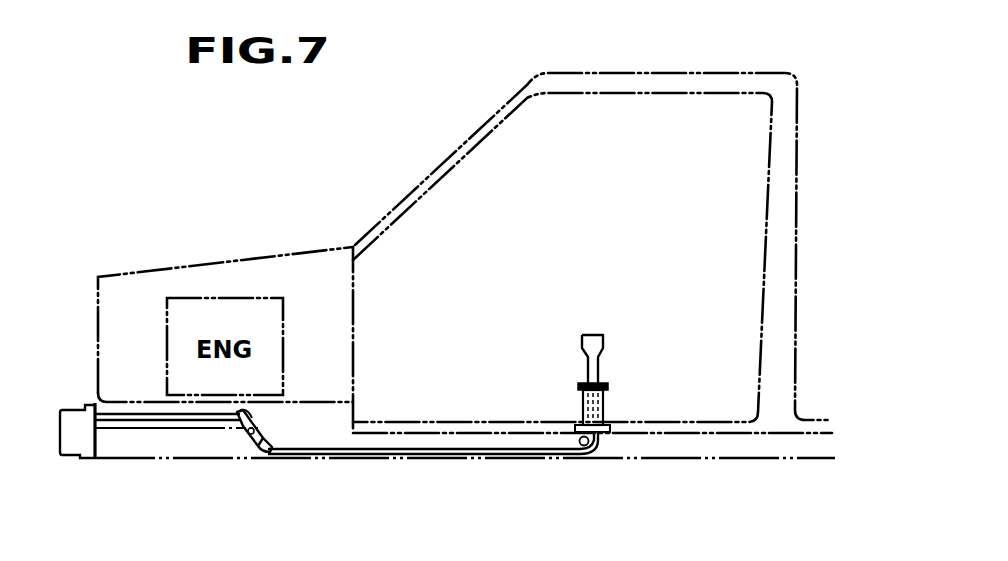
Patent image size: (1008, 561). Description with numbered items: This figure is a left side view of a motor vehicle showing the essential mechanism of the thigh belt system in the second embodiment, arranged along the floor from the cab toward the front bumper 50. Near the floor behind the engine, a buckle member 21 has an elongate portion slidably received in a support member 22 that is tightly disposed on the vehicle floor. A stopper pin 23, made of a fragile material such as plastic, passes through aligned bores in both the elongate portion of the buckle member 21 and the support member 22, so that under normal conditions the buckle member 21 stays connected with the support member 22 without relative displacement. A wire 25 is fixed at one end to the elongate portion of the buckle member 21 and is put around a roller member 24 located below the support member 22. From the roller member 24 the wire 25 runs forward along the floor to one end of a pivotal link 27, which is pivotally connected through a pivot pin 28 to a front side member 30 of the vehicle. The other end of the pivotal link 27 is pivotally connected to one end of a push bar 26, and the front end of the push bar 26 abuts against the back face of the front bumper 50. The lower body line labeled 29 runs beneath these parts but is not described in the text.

The buckle member 21 is at (604, 338).
The support member 22 is at (582, 407).
The stopper pin 23 is at (580, 385).
The roller member 24 is at (587, 457).
The wire 25 is at (488, 456).
The push bar 26 is at (148, 421).
The pivotal link 27 is at (263, 455).
The pivot pin 28 is at (248, 449).
The floor 29 is at (672, 452).
The front side member 30 is at (185, 430).
The front bumper 50 is at (77, 458).